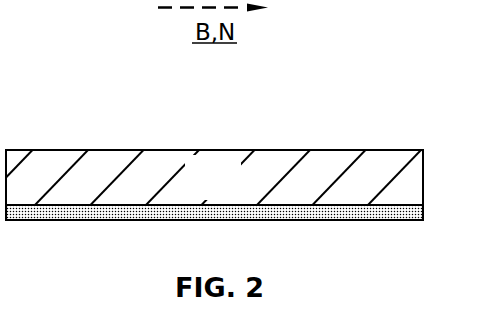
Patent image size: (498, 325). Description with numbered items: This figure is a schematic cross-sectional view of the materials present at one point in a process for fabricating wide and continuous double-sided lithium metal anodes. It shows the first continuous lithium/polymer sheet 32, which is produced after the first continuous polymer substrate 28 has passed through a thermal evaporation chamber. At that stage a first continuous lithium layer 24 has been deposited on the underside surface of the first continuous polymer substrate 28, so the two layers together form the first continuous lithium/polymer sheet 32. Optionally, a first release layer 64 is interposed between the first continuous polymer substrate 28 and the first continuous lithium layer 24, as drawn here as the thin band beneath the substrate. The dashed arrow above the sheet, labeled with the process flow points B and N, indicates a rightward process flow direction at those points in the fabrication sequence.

The first continuous lithium/polymer sheet 32 is at (122, 100).
The first continuous polymer substrate 28 is at (230, 187).
The first continuous lithium layer 24 is at (322, 208).
The first release layer 64 is at (123, 207).